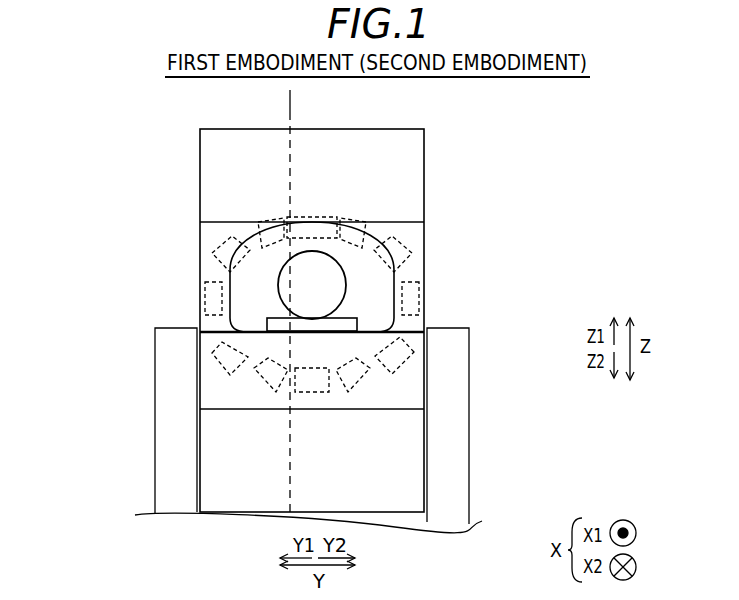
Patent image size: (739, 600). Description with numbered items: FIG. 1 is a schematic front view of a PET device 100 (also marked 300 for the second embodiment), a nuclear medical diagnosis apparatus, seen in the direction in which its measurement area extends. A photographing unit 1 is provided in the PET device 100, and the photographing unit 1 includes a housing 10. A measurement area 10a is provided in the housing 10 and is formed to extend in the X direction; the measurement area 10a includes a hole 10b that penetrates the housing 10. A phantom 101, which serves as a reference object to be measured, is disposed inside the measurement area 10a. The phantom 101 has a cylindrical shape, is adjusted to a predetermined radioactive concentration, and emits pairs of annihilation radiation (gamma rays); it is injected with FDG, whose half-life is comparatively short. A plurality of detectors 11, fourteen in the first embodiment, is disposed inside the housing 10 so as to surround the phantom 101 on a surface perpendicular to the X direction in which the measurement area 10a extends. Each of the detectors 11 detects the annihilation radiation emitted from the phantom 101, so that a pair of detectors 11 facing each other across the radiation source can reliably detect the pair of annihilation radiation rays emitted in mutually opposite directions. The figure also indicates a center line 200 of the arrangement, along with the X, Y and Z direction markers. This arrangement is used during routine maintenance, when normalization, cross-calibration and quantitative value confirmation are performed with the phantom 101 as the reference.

The PET device 100 is at (138, 128).
The rotating electric machine unit of second embodiment 300 is at (302, 309).
The photographing unit 1 is at (173, 155).
The housing 10 is at (384, 165).
The measurement area 10a is at (368, 325).
The hole 10b is at (245, 313).
The phantom 101 is at (327, 254).
The detectors 11 is at (258, 220).
The center line 200 is at (292, 101).